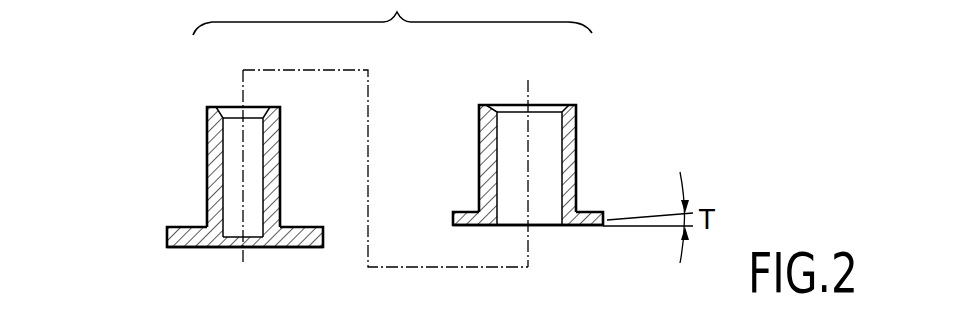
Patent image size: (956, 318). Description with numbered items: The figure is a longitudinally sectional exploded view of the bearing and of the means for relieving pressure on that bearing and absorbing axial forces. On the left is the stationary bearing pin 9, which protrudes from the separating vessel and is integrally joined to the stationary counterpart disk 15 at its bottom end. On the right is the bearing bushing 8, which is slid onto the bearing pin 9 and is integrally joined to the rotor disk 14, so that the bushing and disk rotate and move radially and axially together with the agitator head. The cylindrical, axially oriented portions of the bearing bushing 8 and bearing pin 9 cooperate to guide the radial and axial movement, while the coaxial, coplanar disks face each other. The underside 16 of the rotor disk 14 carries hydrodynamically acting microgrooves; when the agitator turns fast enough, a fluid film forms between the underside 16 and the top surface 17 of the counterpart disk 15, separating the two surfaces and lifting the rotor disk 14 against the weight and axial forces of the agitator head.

The bearing bushing 8 is at (573, 123).
The bearing pin 9 is at (208, 150).
The rotor disk 14 is at (585, 212).
The counterpart disk 15 is at (177, 228).
The underside 16 is at (583, 226).
The top surface 17 is at (187, 258).